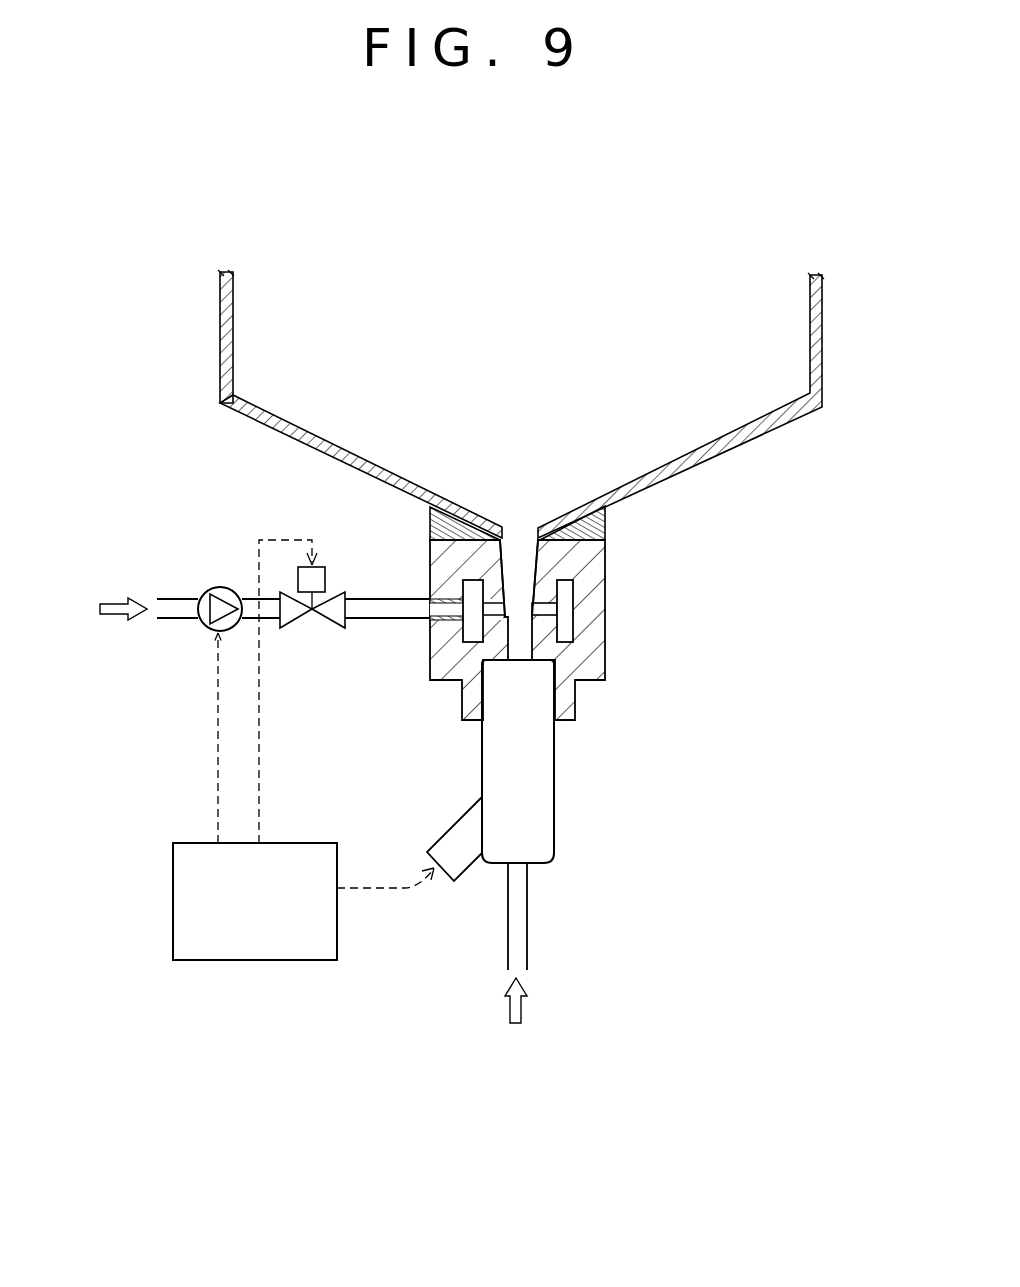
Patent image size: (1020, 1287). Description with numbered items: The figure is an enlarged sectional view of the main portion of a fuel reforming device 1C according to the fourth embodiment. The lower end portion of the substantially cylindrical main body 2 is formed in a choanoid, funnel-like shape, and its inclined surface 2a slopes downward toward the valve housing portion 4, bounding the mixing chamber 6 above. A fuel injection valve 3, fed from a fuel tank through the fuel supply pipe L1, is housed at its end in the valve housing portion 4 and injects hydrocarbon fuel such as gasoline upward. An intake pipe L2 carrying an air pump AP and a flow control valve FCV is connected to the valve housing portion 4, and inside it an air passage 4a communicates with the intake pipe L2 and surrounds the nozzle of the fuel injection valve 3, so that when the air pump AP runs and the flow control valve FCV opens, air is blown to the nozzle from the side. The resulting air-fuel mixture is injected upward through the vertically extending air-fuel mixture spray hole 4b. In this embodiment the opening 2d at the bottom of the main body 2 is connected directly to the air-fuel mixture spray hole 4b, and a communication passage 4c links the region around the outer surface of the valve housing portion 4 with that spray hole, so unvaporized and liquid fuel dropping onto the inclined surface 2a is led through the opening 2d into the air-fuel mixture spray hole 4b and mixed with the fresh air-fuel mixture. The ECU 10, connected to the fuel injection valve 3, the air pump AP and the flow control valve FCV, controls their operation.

The main body 2 is at (822, 330).
The inclined surface 2a is at (273, 415).
The opening 2d is at (505, 527).
The fuel injection valve 3 is at (545, 803).
The valve housing portion 4 is at (440, 680).
The air passage 4a is at (562, 610).
The air-fuel mixture spray hole 4b is at (528, 531).
The communication passage 4c is at (430, 525).
The mixing chamber 6 is at (534, 322).
The ECU 10 is at (173, 897).
The fuel reforming device 1C is at (270, 1022).
The air pump AP is at (220, 588).
The flow control valve FCV is at (318, 628).
The fuel supply pipe L1 is at (508, 945).
The intake pipe L2 is at (393, 620).